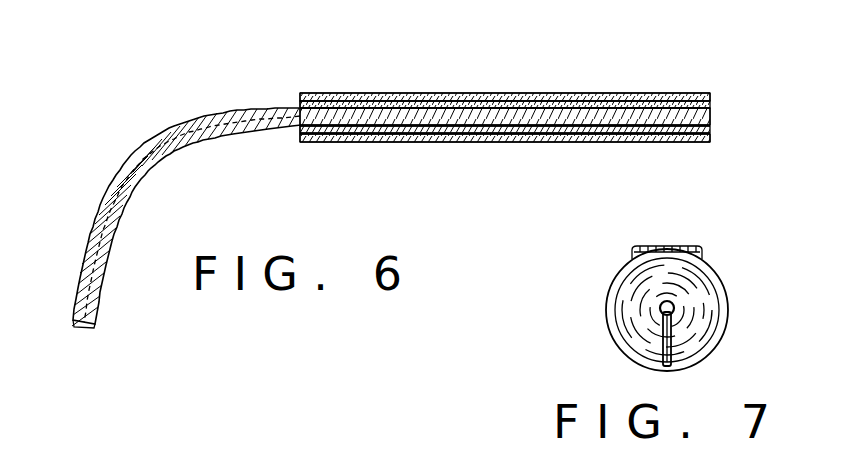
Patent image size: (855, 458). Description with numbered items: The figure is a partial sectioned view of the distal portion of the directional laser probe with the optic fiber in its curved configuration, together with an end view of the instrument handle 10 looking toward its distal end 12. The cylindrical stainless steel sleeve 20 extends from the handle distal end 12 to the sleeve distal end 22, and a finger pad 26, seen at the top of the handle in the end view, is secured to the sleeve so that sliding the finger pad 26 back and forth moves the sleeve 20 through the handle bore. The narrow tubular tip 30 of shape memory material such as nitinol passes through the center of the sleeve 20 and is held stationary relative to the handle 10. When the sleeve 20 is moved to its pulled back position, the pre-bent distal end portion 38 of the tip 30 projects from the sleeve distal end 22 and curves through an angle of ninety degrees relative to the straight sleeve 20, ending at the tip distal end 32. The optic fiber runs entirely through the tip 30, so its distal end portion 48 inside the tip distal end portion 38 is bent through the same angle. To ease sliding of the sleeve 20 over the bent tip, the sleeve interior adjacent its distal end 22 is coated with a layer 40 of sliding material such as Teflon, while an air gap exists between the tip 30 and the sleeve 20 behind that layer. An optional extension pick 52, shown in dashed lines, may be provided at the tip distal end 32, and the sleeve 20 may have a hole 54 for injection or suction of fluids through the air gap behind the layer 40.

In FIG. 7, the handle 10 is at (711, 266).
In FIG. 7, the distal end of handle 12 is at (674, 303).
In FIG. 6, the sleeve 20 is at (522, 94).
In FIG. 7, the sleeve 20 is at (663, 304).
In FIG. 6, the distal end of sleeve 22 is at (297, 100).
In FIG. 7, the distal end of sleeve 22 is at (659, 308).
In FIG. 7, the finger pad 26 is at (690, 246).
In FIG. 6, the tubular tip 30 is at (672, 101).
In FIG. 7, the tubular tip 30 is at (662, 340).
In FIG. 6, the distal end of tip 32 is at (88, 328).
In FIG. 6, the distal end portion of tip 38 is at (282, 100).
In FIG. 6, the layer of sliding material 40 is at (400, 120).
In FIG. 6, the distal end portion of optic fiber 48 is at (293, 140).
In FIG. 6, the extension pick 52 is at (76, 328).
In FIG. 6, the hole 54 is at (678, 145).